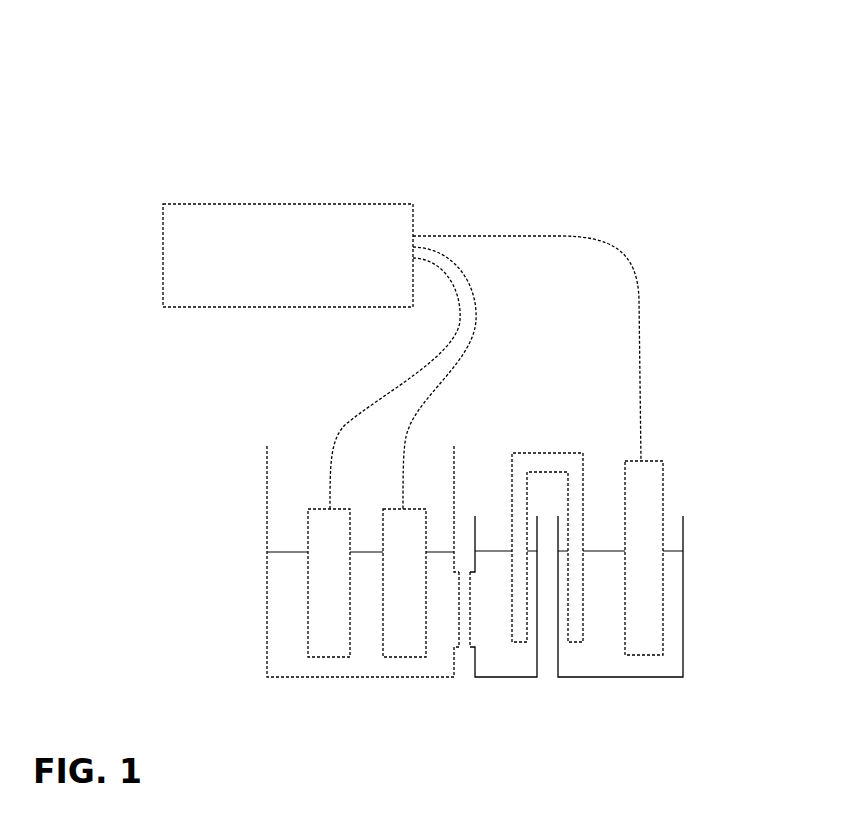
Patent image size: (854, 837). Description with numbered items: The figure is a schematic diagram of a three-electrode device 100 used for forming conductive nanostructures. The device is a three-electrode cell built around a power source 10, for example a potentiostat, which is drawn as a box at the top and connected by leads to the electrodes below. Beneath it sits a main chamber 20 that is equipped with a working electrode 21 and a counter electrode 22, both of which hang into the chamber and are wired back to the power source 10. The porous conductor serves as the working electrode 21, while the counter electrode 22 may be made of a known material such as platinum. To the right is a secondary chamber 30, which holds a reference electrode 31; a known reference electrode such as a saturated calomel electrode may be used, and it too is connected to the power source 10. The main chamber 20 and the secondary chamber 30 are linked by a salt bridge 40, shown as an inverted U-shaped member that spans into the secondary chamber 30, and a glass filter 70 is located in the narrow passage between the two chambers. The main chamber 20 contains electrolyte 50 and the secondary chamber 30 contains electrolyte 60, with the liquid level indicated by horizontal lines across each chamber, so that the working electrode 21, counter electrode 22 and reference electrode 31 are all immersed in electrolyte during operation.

The three-electrode device 100 is at (418, 120).
The power source 10 is at (274, 230).
The main chamber 20 is at (358, 677).
The working electrode 21 is at (327, 608).
The counter electrode 22 is at (407, 628).
The secondary chamber 30 is at (622, 677).
The reference electrode 31 is at (648, 632).
The salt bridge 40 is at (548, 460).
The electrolyte 50 is at (282, 578).
The electrolyte 60 is at (673, 587).
The glass filter 70 is at (464, 631).